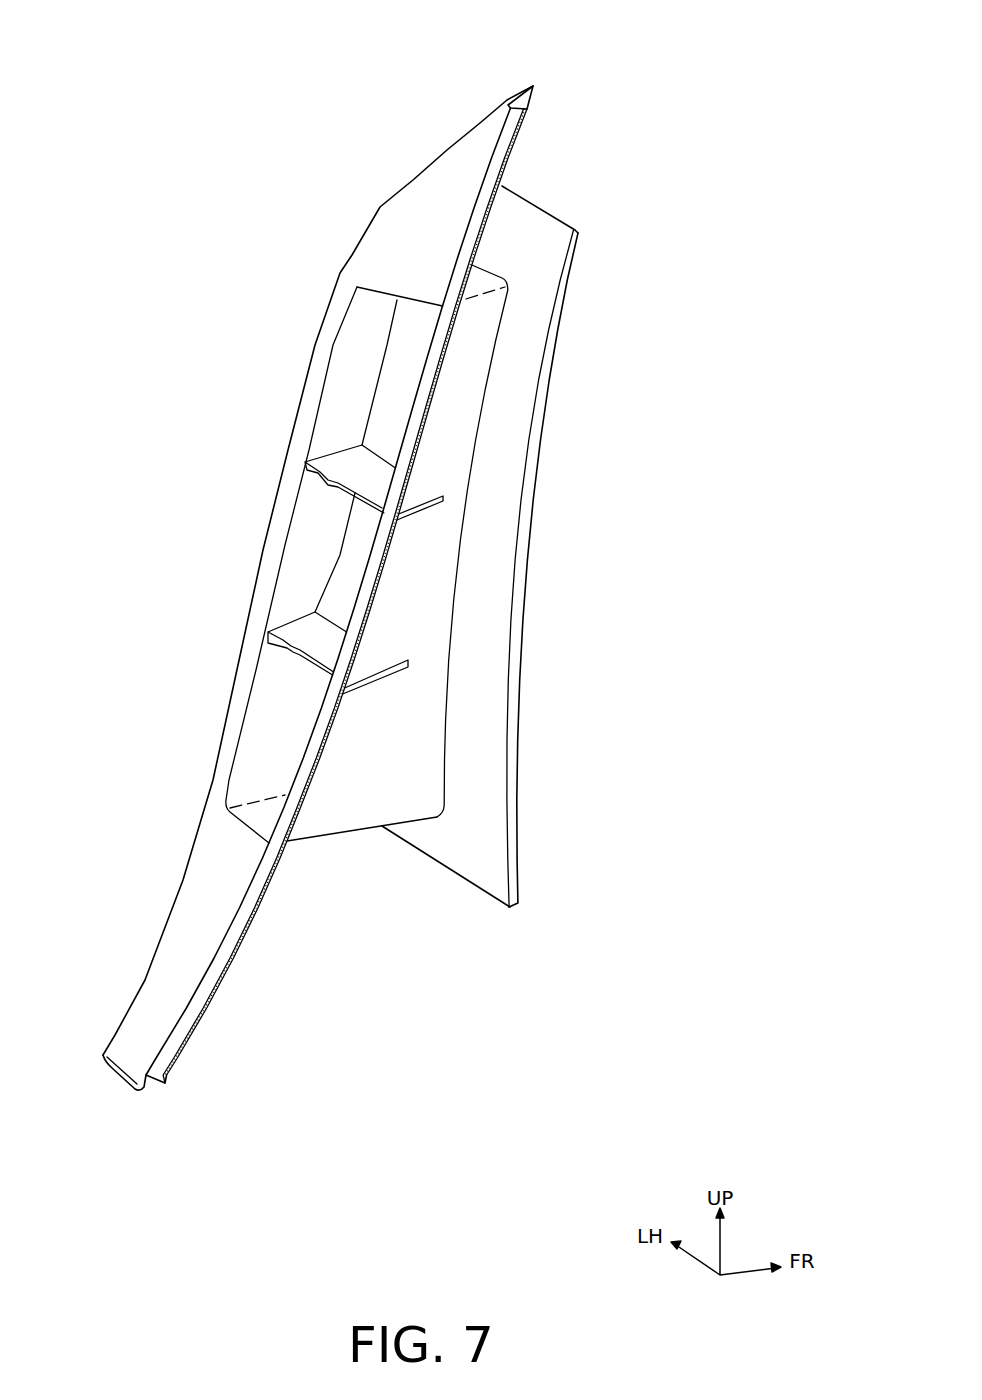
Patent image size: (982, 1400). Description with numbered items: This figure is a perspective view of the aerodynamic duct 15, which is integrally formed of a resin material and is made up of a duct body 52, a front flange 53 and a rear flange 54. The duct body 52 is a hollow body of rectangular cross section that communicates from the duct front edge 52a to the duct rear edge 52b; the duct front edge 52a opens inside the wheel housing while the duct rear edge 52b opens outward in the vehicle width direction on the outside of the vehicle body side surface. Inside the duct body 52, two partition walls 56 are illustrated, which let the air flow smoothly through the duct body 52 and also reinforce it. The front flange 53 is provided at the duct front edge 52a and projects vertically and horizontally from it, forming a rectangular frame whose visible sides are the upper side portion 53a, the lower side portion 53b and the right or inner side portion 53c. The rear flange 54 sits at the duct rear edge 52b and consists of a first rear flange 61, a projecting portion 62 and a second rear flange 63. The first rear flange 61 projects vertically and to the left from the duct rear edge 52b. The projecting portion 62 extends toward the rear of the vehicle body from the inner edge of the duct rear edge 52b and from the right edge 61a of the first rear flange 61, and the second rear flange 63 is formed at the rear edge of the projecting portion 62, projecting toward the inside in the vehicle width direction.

The aerodynamic duct 15 is at (283, 384).
The duct body 52 is at (464, 625).
The duct front edge 52a is at (455, 678).
The duct rear edge 52b is at (273, 688).
The front flange 53 is at (503, 512).
The upper side portion 53a is at (532, 228).
The lower side portion 53b is at (458, 858).
The right side portion 53c is at (513, 587).
The rear flange 54 is at (257, 503).
The partition wall 56 is at (348, 455).
The first rear flange 61 is at (288, 450).
The right edge of first rear flange 61a is at (212, 913).
The projecting portion 62 is at (523, 103).
The second rear flange 63 is at (452, 307).